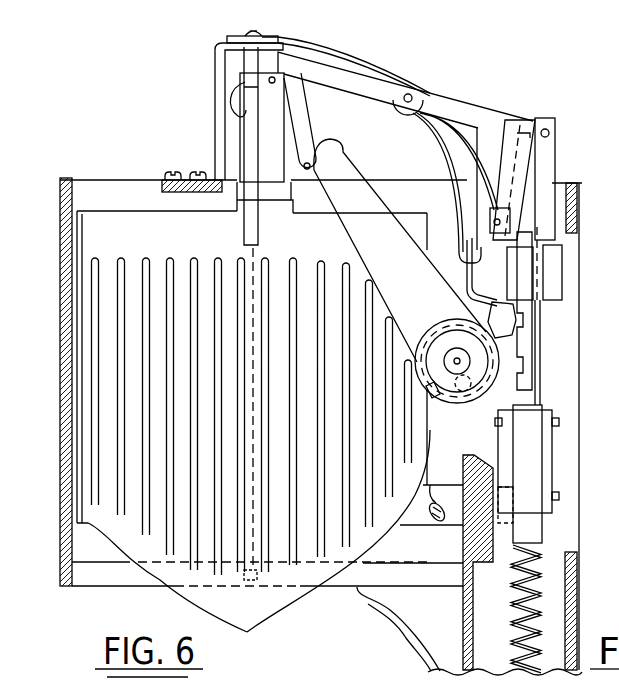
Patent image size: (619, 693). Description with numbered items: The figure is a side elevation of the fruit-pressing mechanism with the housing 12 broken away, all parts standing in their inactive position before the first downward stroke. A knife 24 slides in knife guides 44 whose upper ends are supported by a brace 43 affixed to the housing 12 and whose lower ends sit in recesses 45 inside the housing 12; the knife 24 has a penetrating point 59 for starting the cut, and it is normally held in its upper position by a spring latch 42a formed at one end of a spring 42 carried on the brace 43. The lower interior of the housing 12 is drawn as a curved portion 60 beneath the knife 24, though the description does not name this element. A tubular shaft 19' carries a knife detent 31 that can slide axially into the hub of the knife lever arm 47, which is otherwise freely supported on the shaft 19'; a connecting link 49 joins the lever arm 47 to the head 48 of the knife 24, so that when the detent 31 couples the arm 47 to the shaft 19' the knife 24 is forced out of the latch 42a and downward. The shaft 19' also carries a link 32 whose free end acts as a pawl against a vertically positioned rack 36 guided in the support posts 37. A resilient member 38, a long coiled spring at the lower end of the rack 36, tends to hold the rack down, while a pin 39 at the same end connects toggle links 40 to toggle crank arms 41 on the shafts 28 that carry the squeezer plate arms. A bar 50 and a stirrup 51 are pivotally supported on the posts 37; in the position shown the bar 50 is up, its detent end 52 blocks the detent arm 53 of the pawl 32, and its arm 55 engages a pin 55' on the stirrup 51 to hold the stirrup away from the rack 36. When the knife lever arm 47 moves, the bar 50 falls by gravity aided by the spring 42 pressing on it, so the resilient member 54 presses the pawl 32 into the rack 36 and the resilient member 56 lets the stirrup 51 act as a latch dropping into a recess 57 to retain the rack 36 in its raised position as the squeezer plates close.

The housing 12 is at (60, 237).
The shaft 19' is at (451, 352).
The knife 24 is at (273, 249).
The shafts 28 is at (423, 530).
The knife detent 31 is at (434, 400).
The link 32 is at (513, 333).
The rack 36 is at (528, 357).
The support posts 37 is at (545, 166).
The resilient member 38 is at (541, 553).
The pin 39 is at (558, 497).
The toggle links 40 is at (503, 462).
The toggle crank arms 41 is at (513, 413).
The spring 42 is at (317, 46).
The spring latch 42a is at (240, 100).
The brace 43 is at (215, 141).
The knife guides 44 is at (243, 222).
The recesses 45 is at (247, 579).
The knife lever arm 47 is at (372, 239).
The head of knife 48 is at (275, 99).
The connecting link 49 is at (300, 127).
The bar 50 is at (455, 106).
The stirrup 51 is at (523, 128).
The detent end 52 is at (477, 262).
The detent arm 53 is at (466, 273).
The resilient member 54 is at (466, 237).
The arm 55 is at (455, 162).
The pin 55' is at (471, 207).
The resilient member 56 is at (470, 131).
The recess 57 is at (527, 273).
The penetrating point 59 is at (257, 625).
The hopper bottom 60 is at (160, 581).